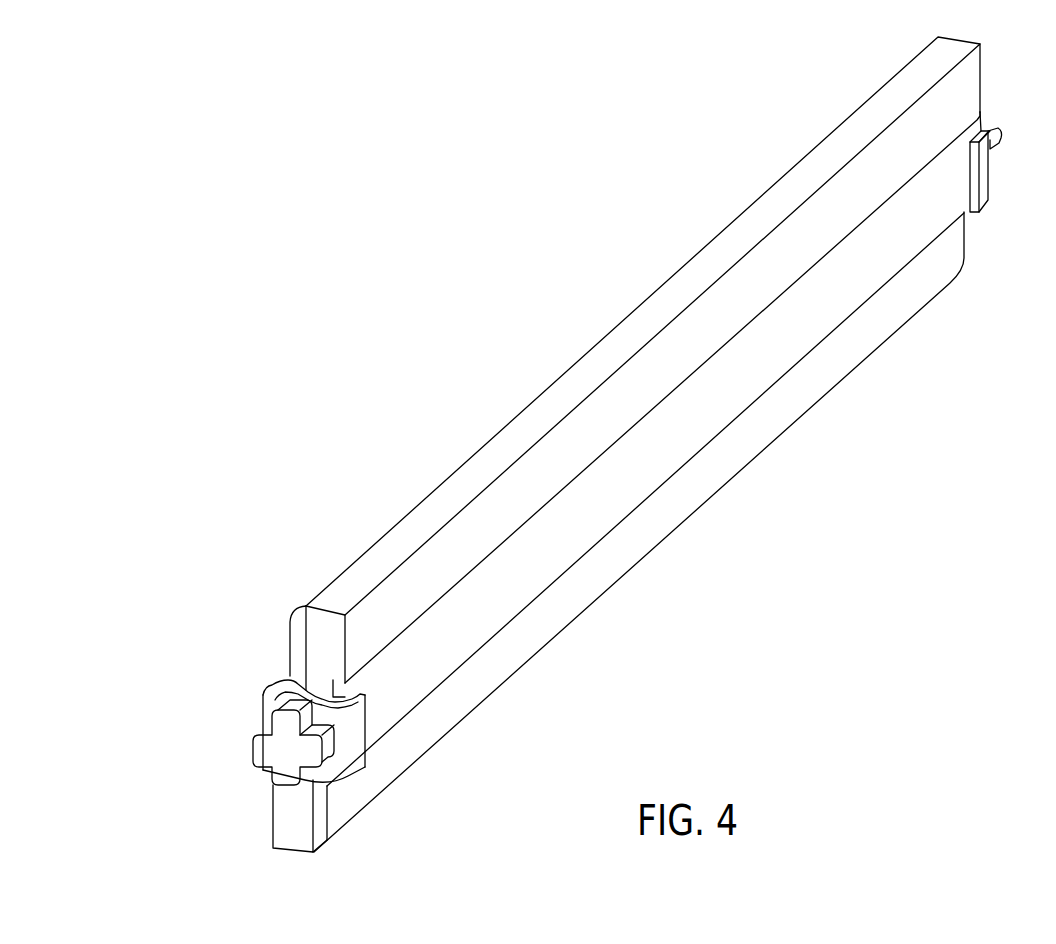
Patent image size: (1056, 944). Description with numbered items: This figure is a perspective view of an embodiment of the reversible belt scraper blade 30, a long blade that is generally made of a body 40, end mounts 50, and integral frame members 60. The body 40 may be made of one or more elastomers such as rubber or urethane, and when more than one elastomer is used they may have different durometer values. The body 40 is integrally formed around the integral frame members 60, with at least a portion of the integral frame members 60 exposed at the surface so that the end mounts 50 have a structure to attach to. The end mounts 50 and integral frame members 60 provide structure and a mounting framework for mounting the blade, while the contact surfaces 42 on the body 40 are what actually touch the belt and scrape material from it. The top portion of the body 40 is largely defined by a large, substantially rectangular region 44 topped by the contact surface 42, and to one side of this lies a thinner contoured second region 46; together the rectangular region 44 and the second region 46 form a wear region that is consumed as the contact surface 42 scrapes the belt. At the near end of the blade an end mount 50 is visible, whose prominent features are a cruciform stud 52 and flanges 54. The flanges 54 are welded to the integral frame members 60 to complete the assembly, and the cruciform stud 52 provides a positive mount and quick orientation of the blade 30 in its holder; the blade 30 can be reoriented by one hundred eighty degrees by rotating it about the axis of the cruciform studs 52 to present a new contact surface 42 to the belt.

The reversible belt scraper blade 30 is at (476, 320).
The body 40 is at (965, 95).
The contact surface 42 is at (742, 233).
The large, substantially rectangular region 44 is at (325, 618).
The second region 46 is at (290, 611).
The end mount 50 is at (308, 726).
The cruciform stud 52 is at (255, 753).
The flange 54 is at (268, 688).
The integral frame member 60 is at (947, 205).